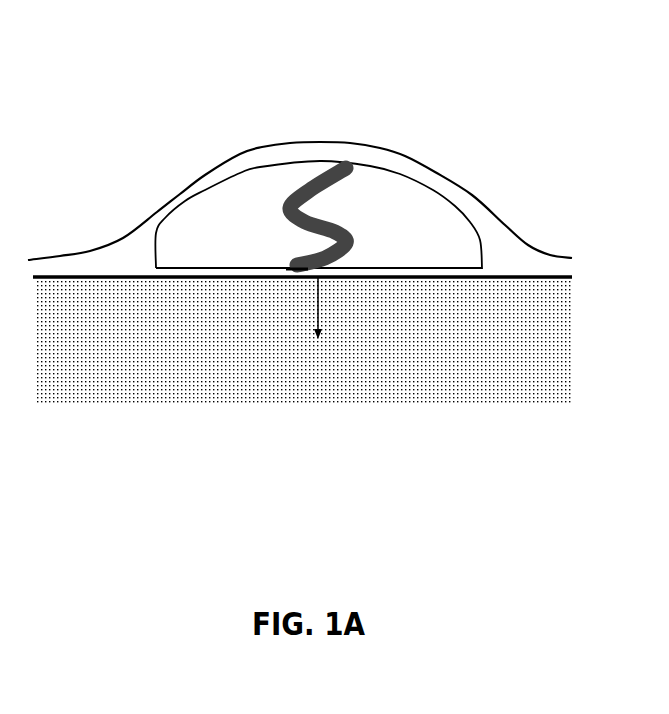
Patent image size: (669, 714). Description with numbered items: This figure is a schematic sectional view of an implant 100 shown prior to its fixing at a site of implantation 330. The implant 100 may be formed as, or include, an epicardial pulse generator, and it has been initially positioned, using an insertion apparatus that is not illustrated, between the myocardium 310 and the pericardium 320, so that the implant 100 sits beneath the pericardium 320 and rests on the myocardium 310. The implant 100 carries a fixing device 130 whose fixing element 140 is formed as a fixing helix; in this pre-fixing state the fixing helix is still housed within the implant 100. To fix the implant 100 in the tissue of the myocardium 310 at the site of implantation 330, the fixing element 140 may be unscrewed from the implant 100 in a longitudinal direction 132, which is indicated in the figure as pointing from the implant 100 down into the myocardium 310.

The implant 100 is at (413, 232).
The fixing device 130 is at (303, 144).
The fixing element 140 is at (318, 167).
The longitudinal direction 132 is at (320, 315).
The myocardium 310 is at (393, 363).
The pericardium 320 is at (552, 252).
The site of implantation 330 is at (222, 330).